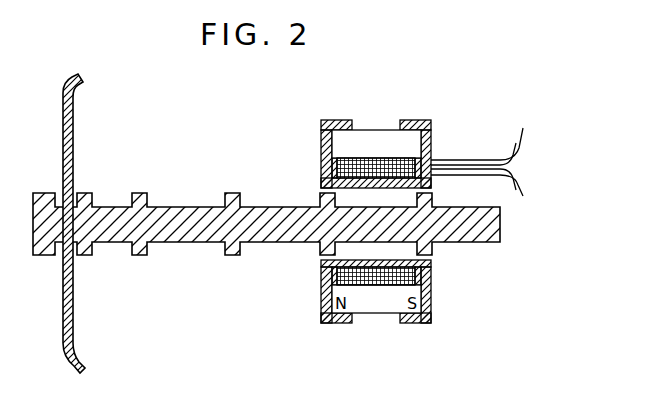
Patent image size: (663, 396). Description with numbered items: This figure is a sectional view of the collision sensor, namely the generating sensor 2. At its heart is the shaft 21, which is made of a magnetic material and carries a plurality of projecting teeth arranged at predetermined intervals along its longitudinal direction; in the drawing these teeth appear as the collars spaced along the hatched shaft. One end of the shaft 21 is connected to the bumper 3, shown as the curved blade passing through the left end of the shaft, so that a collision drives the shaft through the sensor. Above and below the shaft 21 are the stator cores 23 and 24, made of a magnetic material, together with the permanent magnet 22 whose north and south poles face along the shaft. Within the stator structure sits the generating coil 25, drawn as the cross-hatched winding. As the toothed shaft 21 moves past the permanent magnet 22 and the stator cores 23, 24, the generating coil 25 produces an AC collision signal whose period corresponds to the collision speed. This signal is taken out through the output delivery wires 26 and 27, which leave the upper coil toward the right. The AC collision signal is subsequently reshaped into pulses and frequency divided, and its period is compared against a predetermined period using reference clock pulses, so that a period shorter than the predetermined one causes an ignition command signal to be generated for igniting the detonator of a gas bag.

The generating sensor 2 is at (262, 198).
The bumper 3 is at (63, 153).
The shaft 21 is at (163, 217).
The permanent magnet 22 is at (375, 142).
The stator core 23 is at (405, 120).
The stator core 24 is at (333, 120).
The generating coil 25 is at (340, 275).
The output delivery wire 26 is at (481, 160).
The output delivery wire 27 is at (522, 178).